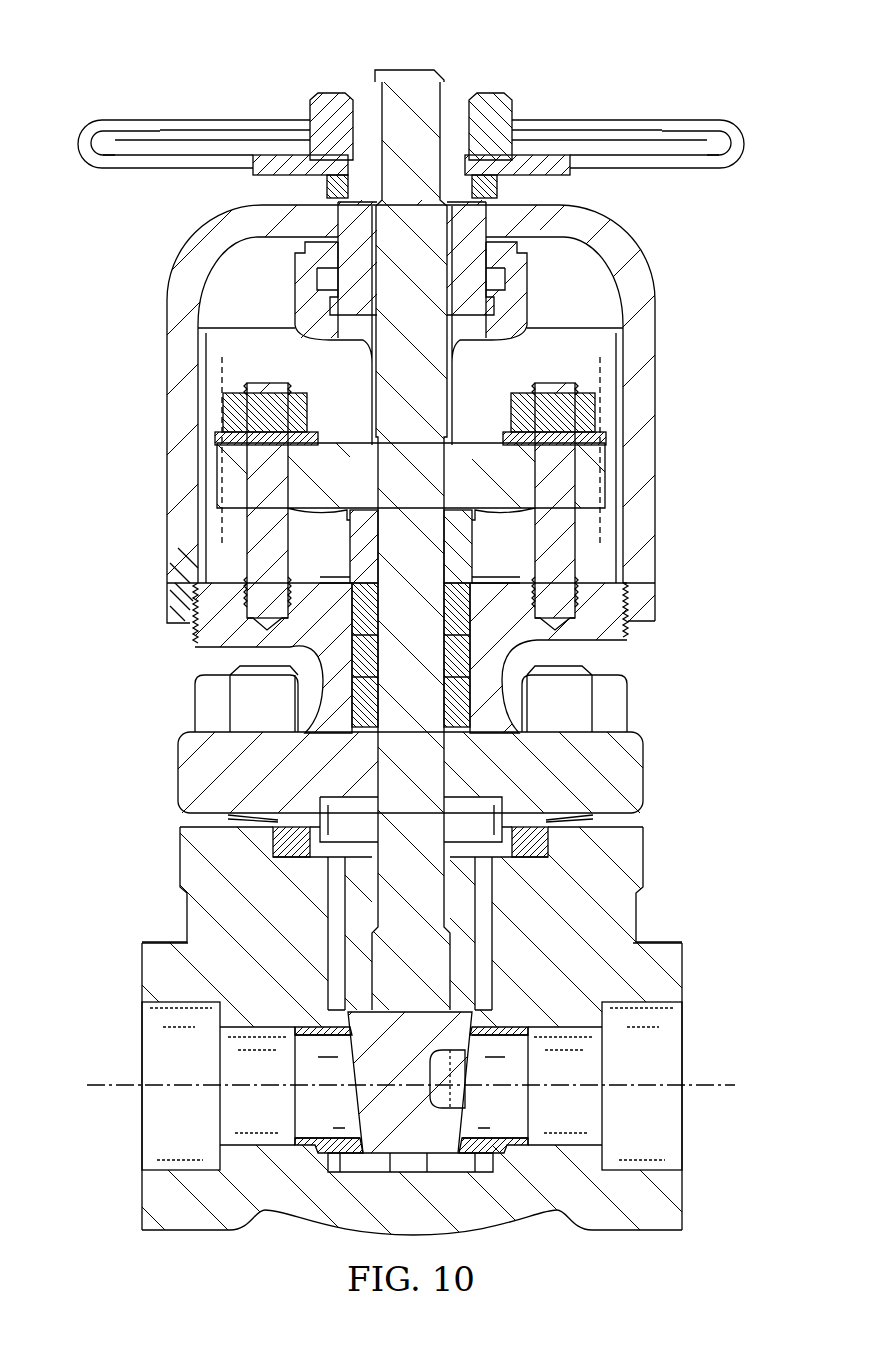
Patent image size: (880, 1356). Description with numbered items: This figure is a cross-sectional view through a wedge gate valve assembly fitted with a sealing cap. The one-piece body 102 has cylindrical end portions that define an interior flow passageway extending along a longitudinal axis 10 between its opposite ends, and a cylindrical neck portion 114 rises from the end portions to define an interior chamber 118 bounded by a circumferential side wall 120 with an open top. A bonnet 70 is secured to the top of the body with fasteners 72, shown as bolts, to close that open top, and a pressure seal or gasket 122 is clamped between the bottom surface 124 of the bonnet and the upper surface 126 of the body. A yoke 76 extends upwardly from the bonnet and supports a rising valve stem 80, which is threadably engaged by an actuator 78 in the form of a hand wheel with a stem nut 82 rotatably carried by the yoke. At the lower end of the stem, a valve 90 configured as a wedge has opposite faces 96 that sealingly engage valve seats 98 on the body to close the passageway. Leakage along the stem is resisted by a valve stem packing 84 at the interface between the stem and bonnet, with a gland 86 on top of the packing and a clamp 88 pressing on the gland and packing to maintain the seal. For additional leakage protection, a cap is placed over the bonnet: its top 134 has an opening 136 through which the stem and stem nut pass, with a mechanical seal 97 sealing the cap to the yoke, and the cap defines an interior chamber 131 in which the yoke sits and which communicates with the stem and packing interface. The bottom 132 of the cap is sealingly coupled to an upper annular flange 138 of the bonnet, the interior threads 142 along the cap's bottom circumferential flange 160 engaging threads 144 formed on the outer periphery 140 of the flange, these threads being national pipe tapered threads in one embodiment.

The longitudinal axis 10 is at (100, 1088).
The actuator 78 is at (606, 120).
The valve stem 80 is at (413, 68).
The stem nut 82 is at (357, 92).
The opening 136 is at (330, 188).
The mechanical seal 97 is at (513, 223).
The top 134 is at (203, 240).
The interior chamber 131 is at (598, 340).
The yoke 76 is at (500, 342).
The clamp 88 is at (605, 488).
The gland 86 is at (463, 548).
The valve stem packing 84 is at (470, 610).
The upper annular flange 138 is at (208, 627).
The outer periphery 140 is at (188, 610).
The interior threads 142 is at (193, 590).
The threads 144 is at (181, 602).
The bottom circumferential flange 160 is at (168, 582).
The bottom 132 is at (655, 598).
The fasteners 72 is at (627, 702).
The bonnet 70 is at (180, 752).
The gasket 122 is at (303, 817).
The bottom surface 124 is at (228, 817).
The upper surface 126 is at (593, 820).
The neck portion 114 is at (188, 866).
The interior chamber 118 is at (337, 903).
The circumferential side wall 120 is at (483, 905).
The valve seats 98 is at (333, 1028).
The faces 96 is at (355, 1105).
The valve 90 is at (400, 1142).
The body 102 is at (195, 1232).